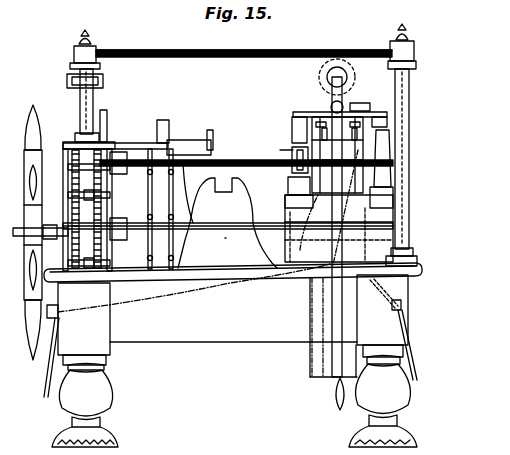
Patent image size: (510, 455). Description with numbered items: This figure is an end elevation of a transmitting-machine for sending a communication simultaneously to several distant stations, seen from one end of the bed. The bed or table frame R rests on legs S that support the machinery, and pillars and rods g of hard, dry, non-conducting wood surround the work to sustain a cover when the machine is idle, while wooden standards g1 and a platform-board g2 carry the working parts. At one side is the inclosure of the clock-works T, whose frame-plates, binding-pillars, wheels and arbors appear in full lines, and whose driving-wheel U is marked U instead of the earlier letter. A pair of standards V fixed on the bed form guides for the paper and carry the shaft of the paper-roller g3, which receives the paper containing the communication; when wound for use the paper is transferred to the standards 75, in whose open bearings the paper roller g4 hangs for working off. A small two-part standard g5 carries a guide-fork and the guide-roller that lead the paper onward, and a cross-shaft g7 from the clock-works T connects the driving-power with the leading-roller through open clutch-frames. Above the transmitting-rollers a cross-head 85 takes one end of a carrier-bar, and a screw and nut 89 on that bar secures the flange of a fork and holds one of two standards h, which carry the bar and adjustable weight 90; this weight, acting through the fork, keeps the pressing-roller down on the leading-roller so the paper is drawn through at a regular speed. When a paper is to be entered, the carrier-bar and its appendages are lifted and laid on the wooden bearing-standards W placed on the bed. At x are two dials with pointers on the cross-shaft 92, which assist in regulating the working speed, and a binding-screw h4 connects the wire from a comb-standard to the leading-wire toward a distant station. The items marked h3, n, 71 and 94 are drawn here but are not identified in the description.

The pillars and rods g is at (222, 50).
The standards g1 is at (339, 228).
The platform-board g2 is at (329, 207).
The paper-roller g3 is at (404, 145).
The paper roller g4 is at (300, 164).
The two-part standard g5 is at (293, 122).
The cross-shaft g7 is at (212, 147).
The standards h is at (89, 89).
The bracket h3 is at (402, 303).
The binding-screw h4 is at (62, 312).
The rod n is at (222, 335).
The dials x is at (248, 324).
The bed or table frame R is at (233, 287).
The legs S is at (234, 361).
The inclosure of the clock-works T is at (87, 210).
The driving-wheel U is at (40, 232).
The standards V is at (151, 209).
The wooden bearing-standards W is at (227, 223).
The slide frame 71 is at (337, 155).
The standards 75 is at (228, 181).
The cross-head 85 is at (359, 101).
The screw and nut 89 is at (330, 105).
The adjustable weight 90 is at (337, 77).
The cross-shaft 92 is at (222, 239).
The guide 94 is at (339, 127).